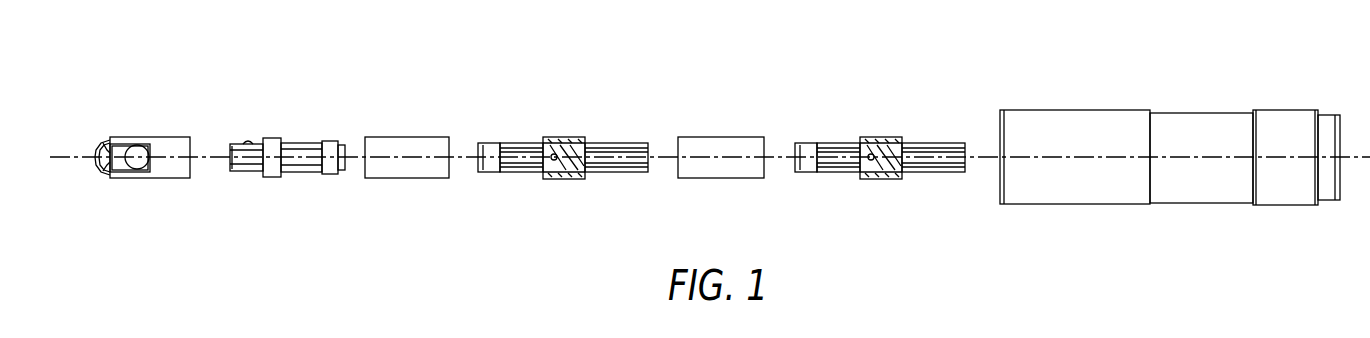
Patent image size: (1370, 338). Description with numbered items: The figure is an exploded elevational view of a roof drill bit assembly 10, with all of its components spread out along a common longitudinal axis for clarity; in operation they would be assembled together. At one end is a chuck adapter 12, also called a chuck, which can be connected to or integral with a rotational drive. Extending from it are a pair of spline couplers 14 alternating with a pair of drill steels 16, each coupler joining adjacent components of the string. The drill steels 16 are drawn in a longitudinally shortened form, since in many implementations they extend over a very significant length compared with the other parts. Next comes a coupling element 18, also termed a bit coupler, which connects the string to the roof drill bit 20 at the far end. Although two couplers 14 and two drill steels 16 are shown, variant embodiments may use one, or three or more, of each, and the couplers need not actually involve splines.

The roof drill bit assembly 10 is at (1222, 73).
The chuck adapter 12 is at (1070, 110).
The spline coupler 14 is at (518, 141).
The drill steel 16 is at (413, 135).
The coupling element 18 is at (275, 137).
The roof drill bit 20 is at (162, 136).